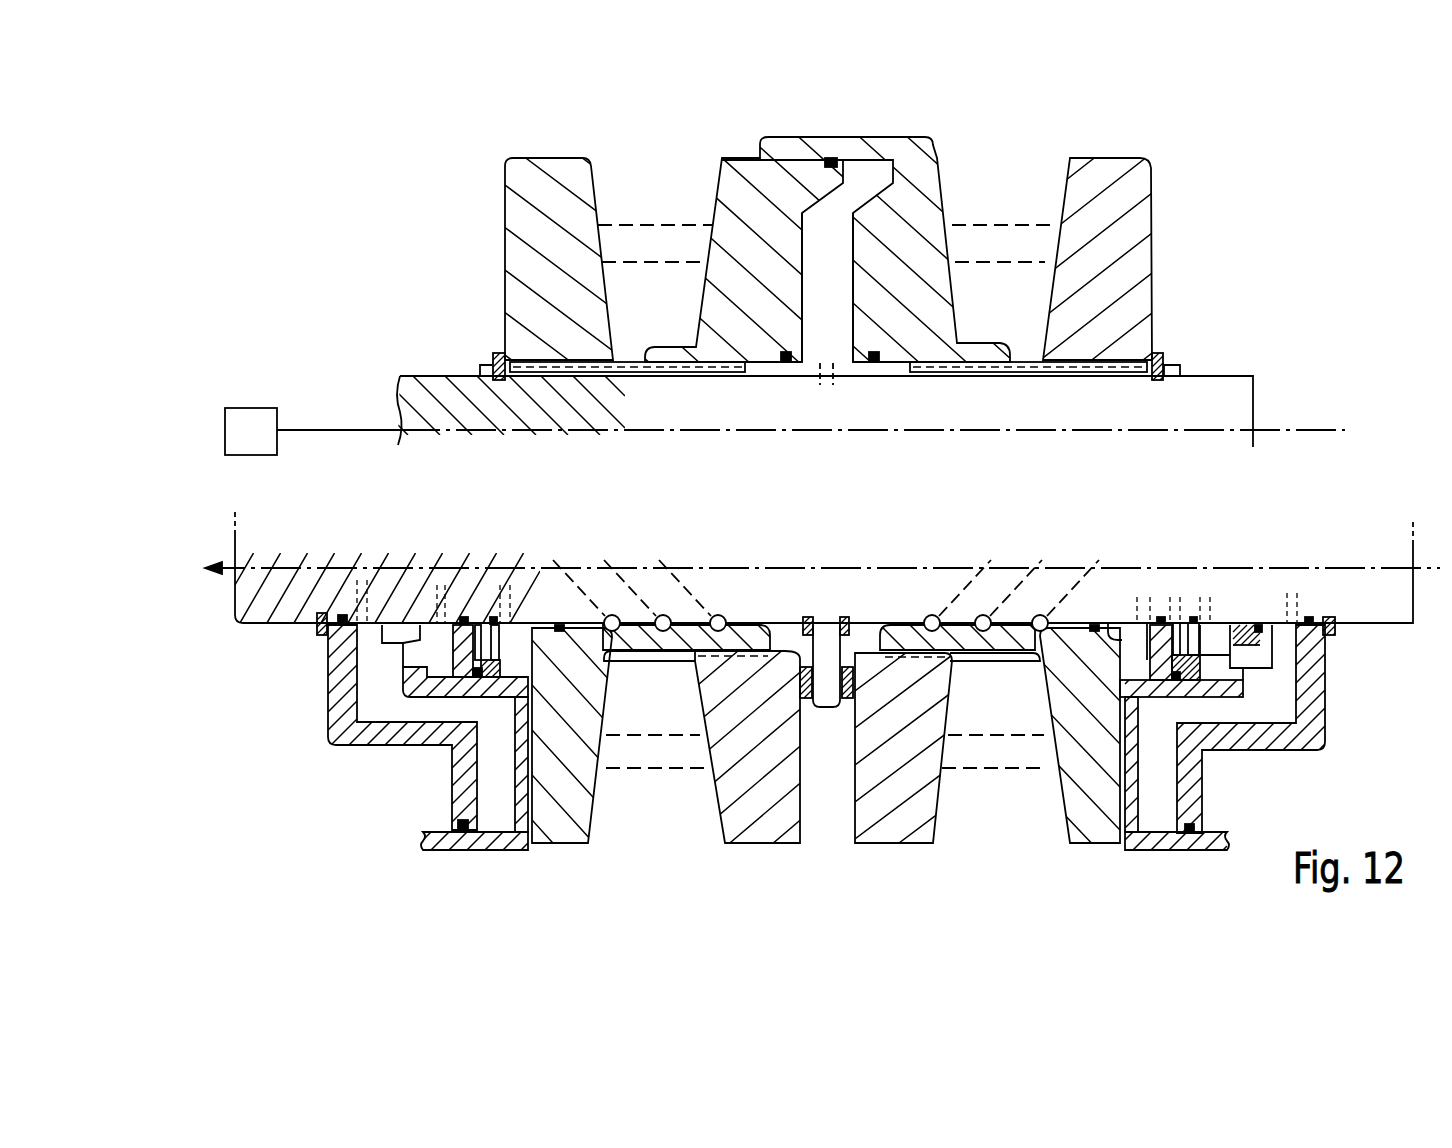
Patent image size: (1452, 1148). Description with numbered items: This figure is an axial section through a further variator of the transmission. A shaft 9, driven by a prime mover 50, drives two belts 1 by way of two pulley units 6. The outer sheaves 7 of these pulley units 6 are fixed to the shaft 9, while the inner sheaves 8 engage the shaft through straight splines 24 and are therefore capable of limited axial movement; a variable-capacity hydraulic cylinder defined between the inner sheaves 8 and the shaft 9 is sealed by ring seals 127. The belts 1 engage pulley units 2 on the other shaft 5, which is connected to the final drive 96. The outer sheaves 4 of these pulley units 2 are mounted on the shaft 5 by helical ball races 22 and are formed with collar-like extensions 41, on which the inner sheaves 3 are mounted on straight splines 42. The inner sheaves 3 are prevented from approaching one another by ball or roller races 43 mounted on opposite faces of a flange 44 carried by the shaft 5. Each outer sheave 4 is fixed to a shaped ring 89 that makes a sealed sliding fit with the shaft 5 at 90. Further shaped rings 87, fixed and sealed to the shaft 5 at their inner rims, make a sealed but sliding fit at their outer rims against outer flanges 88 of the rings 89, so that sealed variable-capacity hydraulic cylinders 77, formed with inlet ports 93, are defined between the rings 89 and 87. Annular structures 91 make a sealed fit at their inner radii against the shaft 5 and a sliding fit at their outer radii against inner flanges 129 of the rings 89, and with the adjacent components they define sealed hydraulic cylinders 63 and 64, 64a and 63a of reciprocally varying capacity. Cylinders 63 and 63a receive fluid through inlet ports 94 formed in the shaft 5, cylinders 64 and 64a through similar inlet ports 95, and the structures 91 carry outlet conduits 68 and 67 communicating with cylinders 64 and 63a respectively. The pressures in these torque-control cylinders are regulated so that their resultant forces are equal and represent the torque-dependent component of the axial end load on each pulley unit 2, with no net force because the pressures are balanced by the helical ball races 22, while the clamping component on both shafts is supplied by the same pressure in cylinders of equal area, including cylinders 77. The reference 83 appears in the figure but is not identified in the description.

The belts 1 is at (660, 224).
The pulley units 2 is at (652, 810).
The inner sheaves 3 is at (766, 838).
The outer sheaves 4 is at (571, 838).
The shaft 5 is at (266, 597).
The pulley units 6 is at (664, 175).
The outer sheaves 7 is at (522, 186).
The inner sheaves 8 is at (741, 185).
The shaft 9 is at (421, 374).
The helical ball races 22 is at (686, 592).
The straight splines 24 is at (688, 368).
The collar-like extensions 41 is at (737, 626).
The straight splines 42 is at (676, 663).
The ball or roller races 43 is at (826, 708).
The flange 44 is at (823, 625).
The prime mover 50 is at (255, 407).
The hydraulic cylinder 63 is at (441, 668).
The hydraulic cylinder 63a is at (1221, 640).
The hydraulic cylinder 64 is at (508, 640).
The hydraulic cylinder 64a is at (1134, 650).
The outlet conduit 67 is at (1186, 620).
The outlet conduit 68 is at (478, 625).
The hydraulic cylinders 77 is at (380, 677).
The gap 83 is at (825, 348).
The shaped rings 87 is at (356, 745).
The outer flanges 88 is at (479, 850).
The shaped ring 89 is at (556, 793).
The sealed sliding fit 90 is at (479, 678).
The annular structures 91 is at (432, 640).
The inlet ports 93 is at (330, 640).
The fluid inlet ports 94 is at (452, 620).
The inlet ports 95 is at (1143, 612).
The final drive 96 is at (805, 568).
The ring seals 127 is at (851, 158).
The inner flanges 129 is at (399, 700).